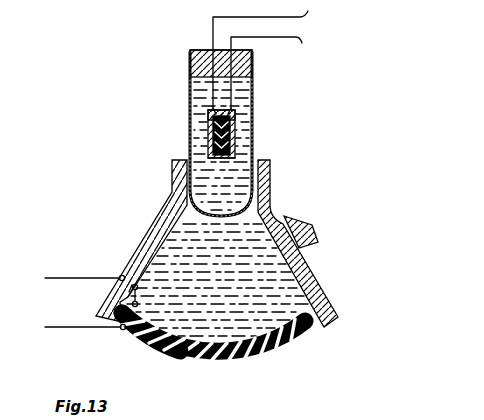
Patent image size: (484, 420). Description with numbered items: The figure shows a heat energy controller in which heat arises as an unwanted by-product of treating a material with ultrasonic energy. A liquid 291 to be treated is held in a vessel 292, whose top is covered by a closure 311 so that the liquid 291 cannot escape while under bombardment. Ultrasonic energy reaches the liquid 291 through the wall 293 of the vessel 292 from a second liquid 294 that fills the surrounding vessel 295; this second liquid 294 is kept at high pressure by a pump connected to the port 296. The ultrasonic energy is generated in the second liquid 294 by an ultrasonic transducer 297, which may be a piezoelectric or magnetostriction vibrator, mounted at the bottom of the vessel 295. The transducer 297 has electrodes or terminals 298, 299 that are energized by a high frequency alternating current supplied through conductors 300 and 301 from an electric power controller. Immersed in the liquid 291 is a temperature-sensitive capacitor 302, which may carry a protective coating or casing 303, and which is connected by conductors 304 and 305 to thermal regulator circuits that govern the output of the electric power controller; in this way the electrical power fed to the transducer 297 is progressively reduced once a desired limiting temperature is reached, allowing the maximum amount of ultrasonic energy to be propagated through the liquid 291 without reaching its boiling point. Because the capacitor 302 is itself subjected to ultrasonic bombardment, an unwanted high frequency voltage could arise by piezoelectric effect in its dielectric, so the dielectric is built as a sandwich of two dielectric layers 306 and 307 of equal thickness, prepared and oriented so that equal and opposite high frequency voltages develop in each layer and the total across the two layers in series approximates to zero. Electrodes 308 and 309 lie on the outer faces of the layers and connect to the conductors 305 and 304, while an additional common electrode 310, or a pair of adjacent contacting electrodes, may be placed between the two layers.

The liquid 291 is at (250, 182).
The vessel 292 is at (255, 82).
The wall 293 is at (222, 217).
The second liquid 294 is at (300, 273).
The vessel 295 is at (320, 297).
The port 296 is at (314, 228).
The ultrasonic transducer 297 is at (225, 355).
The electrode 298 is at (187, 330).
The electrode 299 is at (183, 349).
The conductor 300 is at (80, 276).
The conductor 301 is at (88, 331).
The temperature-sensitive capacitor 302 is at (208, 113).
The protective coating or casing 303 is at (212, 153).
The conductor 304 is at (278, 55).
The conductor 305 is at (302, 43).
The dielectric layer 306 is at (196, 102).
The dielectric layer 307 is at (240, 100).
The electrode 308 is at (209, 131).
The electrode 309 is at (236, 131).
The common electrode 310 is at (238, 158).
The closure 311 is at (207, 50).